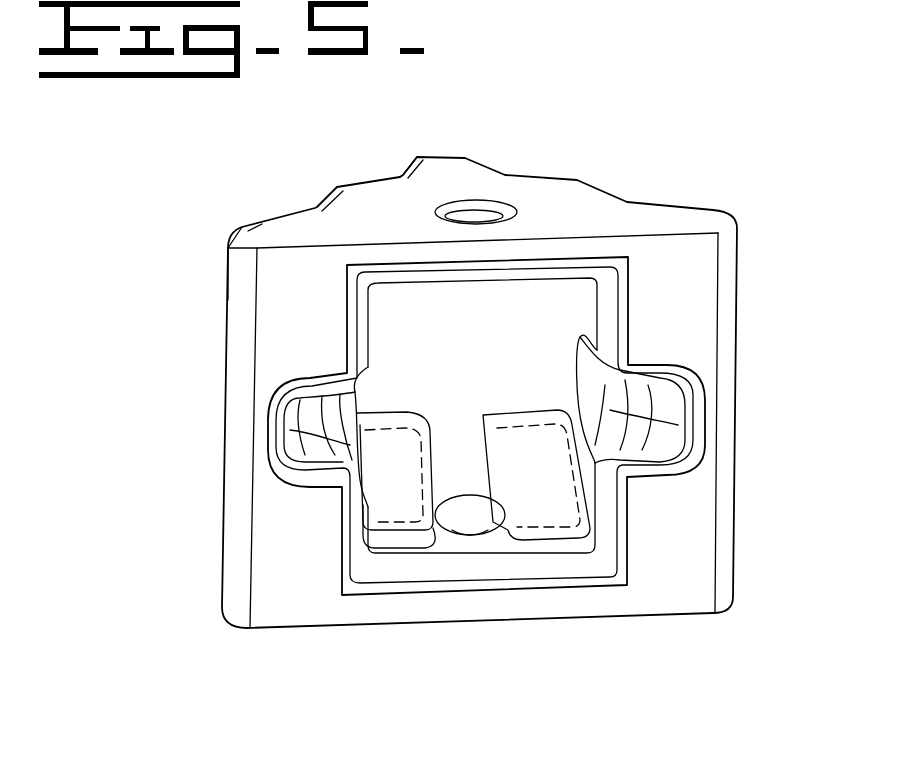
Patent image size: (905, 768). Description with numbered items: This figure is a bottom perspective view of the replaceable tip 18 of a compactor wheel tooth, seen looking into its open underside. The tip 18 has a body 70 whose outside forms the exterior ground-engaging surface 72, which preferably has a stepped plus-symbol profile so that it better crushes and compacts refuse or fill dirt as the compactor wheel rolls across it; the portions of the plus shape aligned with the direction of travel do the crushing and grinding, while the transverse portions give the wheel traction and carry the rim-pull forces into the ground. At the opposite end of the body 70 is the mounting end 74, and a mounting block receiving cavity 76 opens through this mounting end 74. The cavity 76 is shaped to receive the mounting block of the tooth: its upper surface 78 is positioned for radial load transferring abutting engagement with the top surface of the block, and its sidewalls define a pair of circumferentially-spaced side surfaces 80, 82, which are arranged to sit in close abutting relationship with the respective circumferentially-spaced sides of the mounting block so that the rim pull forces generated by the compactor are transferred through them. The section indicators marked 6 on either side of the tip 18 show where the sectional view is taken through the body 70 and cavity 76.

The section line 6- 6 is at (242, 435).
The replaceable tip 18 is at (647, 152).
The body 70 is at (672, 205).
The exterior ground-engaging surface 72 is at (367, 182).
The mounting end 74 is at (292, 273).
The mounting block receiving cavity 76 is at (492, 305).
The upper surface 78 is at (478, 389).
The circumferentially-spaced side surface 80 is at (368, 328).
The circumferentially-spaced side surface 82 is at (590, 477).